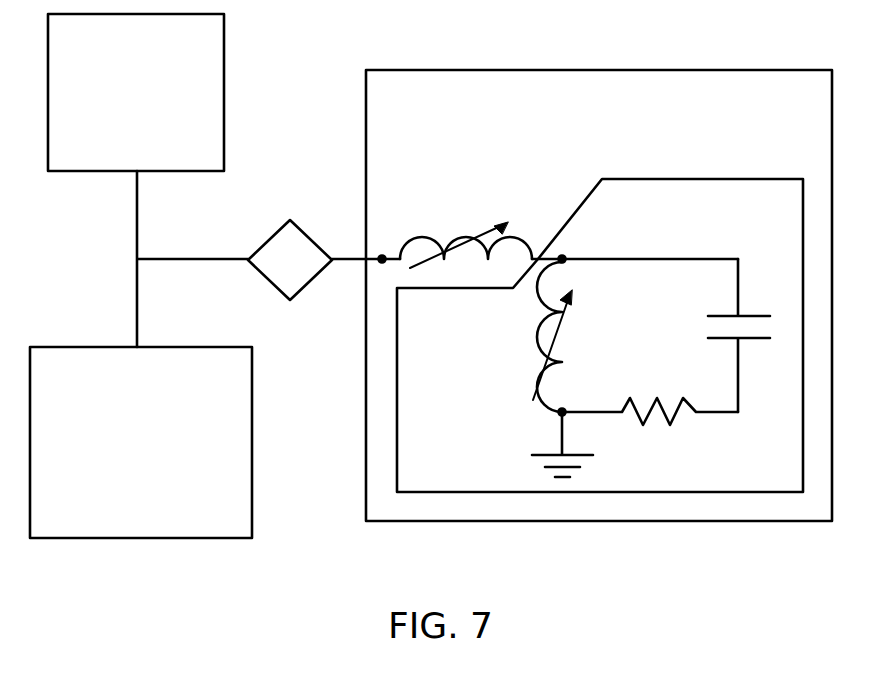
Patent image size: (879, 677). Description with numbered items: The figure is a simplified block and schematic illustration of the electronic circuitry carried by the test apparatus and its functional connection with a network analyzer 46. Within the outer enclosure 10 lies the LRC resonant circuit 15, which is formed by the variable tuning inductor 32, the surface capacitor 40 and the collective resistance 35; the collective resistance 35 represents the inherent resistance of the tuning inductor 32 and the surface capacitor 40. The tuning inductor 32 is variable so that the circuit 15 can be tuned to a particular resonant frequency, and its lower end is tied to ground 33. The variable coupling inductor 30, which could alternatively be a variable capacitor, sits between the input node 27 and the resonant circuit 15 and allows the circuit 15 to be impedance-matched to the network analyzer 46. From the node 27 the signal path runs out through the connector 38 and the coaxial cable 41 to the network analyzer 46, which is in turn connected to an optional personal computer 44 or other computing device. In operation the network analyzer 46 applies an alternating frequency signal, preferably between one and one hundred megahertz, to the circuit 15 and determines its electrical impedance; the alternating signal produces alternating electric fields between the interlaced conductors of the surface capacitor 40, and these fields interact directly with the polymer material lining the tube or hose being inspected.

The electrical feedthrough assembly housing 10 is at (563, 70).
The LRC resonant circuit 15 is at (675, 179).
The input terminal node 27 is at (382, 261).
The variable coupling inductor 30 is at (428, 237).
The tuning inductor 32 is at (540, 333).
The ground 33 is at (540, 455).
The collective resistance 35 is at (646, 400).
The connector 38 is at (296, 236).
The surface capacitor 40 is at (767, 315).
The coaxial cable 41 is at (196, 258).
The personal computer 44 is at (224, 92).
The network analyzer 46 is at (252, 492).